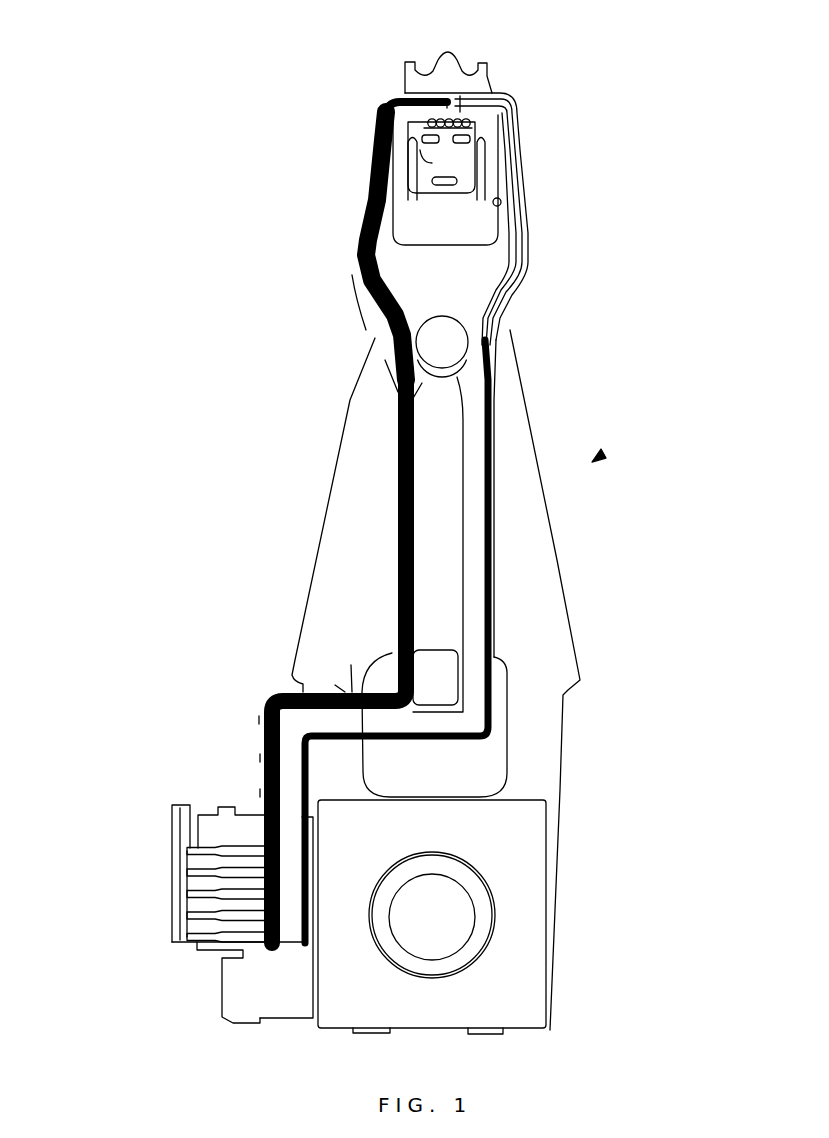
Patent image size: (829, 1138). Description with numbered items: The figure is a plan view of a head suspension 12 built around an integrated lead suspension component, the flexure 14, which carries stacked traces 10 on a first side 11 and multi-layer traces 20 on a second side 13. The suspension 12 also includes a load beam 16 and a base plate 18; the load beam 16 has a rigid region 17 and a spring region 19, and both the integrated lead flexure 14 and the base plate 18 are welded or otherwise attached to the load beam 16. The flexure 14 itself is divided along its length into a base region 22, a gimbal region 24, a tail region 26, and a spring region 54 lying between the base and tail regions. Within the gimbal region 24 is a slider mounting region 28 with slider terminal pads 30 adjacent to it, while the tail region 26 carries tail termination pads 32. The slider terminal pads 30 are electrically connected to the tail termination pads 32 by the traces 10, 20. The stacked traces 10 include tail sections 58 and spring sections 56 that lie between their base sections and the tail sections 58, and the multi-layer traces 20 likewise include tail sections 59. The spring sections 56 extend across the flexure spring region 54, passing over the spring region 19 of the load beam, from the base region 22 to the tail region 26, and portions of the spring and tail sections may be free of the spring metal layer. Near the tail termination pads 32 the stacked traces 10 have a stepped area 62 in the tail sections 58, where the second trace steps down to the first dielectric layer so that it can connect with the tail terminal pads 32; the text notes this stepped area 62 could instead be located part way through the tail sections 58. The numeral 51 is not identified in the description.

The stacked traces 10 is at (478, 462).
The first side 11 is at (493, 523).
The head suspension 12 is at (598, 458).
The second side 13 is at (395, 530).
The integrated lead flexure 14 is at (452, 593).
The load beam 16 is at (338, 588).
The rigid region 17 is at (545, 610).
The base plate 18 is at (530, 883).
The spring region 19 is at (540, 740).
The multi-layer traces 20 is at (397, 470).
The base region 22 is at (433, 453).
The gimbal region 24 is at (367, 177).
The tail region 26 is at (260, 793).
The slider mounting region 28 is at (370, 122).
The slider terminal pads 30 is at (393, 97).
The tail termination pads 32 is at (193, 938).
The shield junction 51 is at (351, 665).
The spring region 54 is at (335, 685).
The spring sections 56 is at (342, 722).
The tail sections 58 is at (259, 720).
The tail sections 59 is at (260, 758).
The stepped area 62 is at (273, 924).